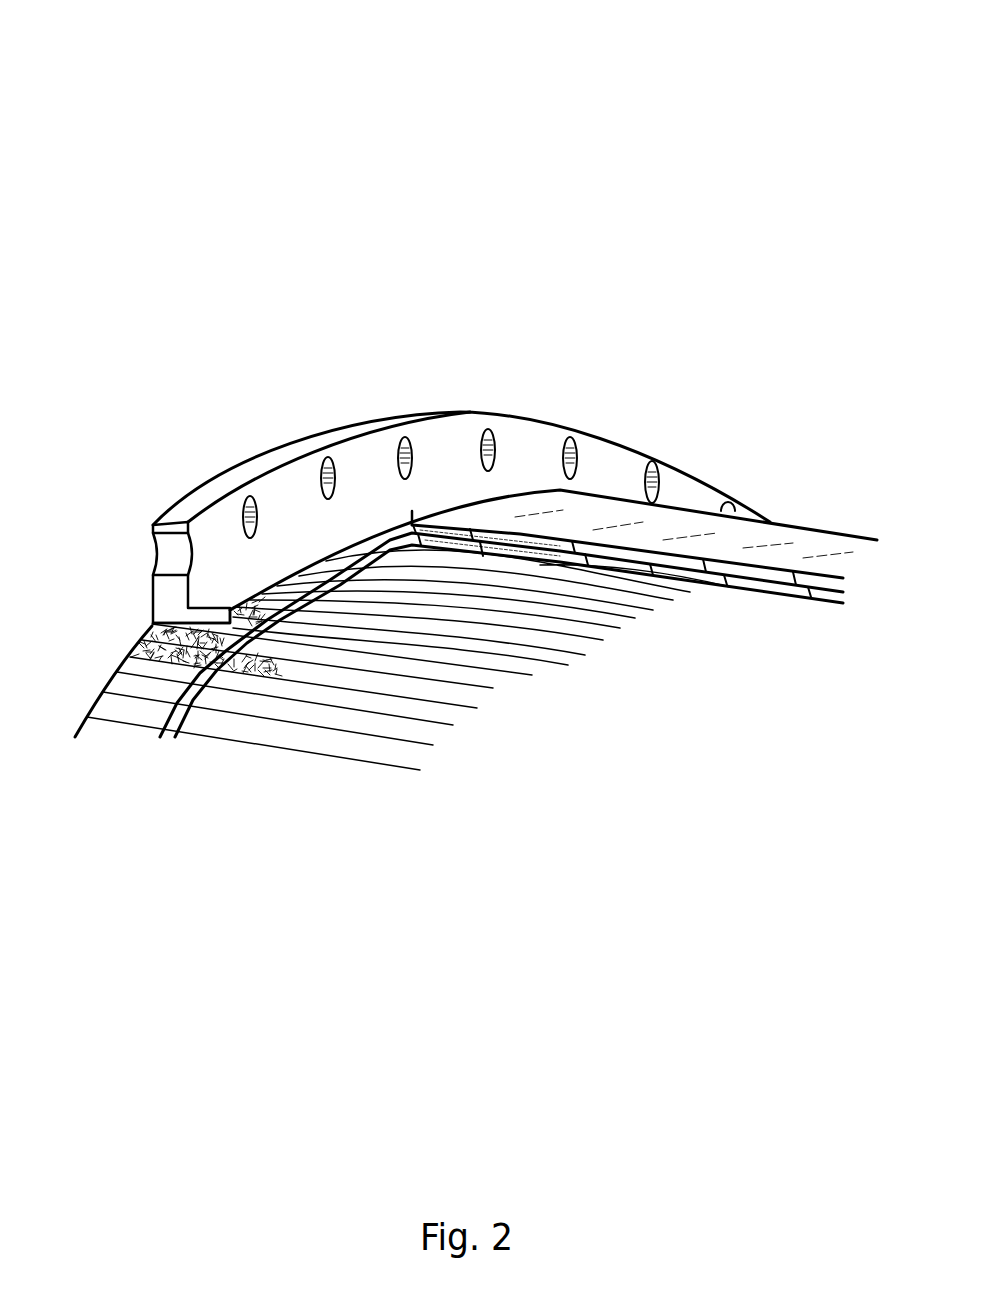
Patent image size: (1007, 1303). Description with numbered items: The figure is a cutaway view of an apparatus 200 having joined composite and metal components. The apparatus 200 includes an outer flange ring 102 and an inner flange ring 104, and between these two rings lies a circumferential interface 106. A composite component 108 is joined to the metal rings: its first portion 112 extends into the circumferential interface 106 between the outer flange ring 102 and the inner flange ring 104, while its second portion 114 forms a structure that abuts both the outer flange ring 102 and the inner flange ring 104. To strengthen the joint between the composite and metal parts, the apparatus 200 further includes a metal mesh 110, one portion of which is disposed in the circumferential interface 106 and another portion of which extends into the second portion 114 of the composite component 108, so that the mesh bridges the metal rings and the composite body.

The apparatus 200 is at (100, 75).
The outer flange ring 102 is at (365, 455).
The inner flange ring 104 is at (117, 683).
The circumferential interface 106 is at (147, 617).
The composite component 108 is at (814, 547).
The metal mesh 110 is at (140, 727).
The first portion 112 is at (148, 632).
The second portion 114 is at (493, 512).